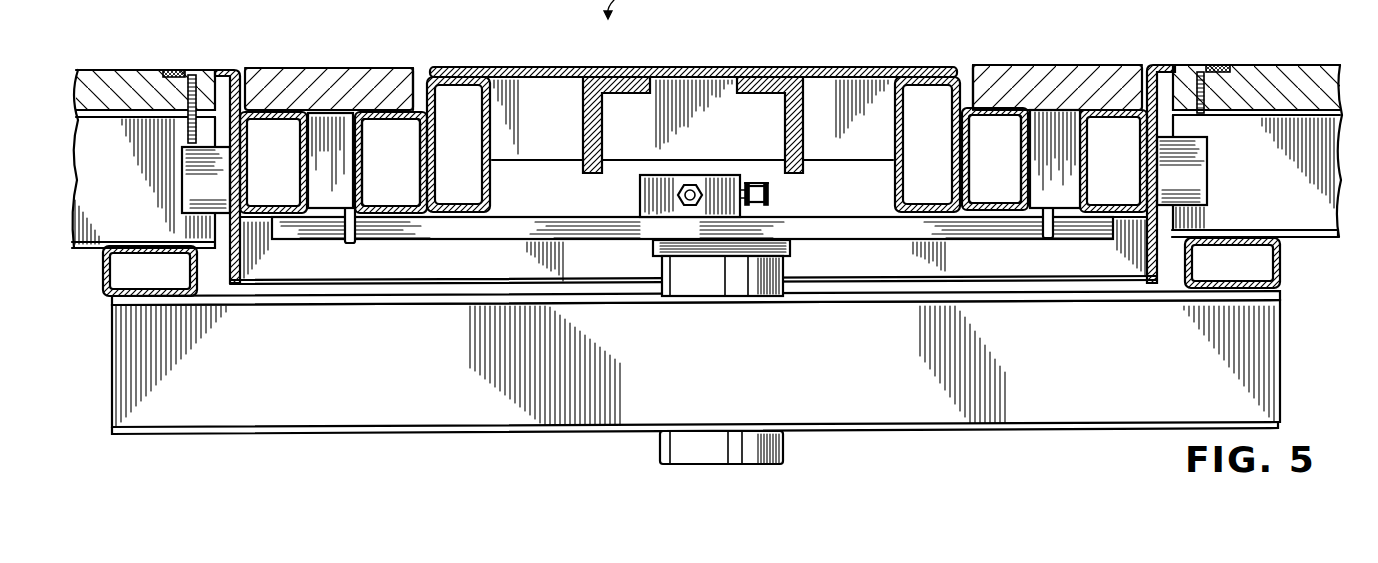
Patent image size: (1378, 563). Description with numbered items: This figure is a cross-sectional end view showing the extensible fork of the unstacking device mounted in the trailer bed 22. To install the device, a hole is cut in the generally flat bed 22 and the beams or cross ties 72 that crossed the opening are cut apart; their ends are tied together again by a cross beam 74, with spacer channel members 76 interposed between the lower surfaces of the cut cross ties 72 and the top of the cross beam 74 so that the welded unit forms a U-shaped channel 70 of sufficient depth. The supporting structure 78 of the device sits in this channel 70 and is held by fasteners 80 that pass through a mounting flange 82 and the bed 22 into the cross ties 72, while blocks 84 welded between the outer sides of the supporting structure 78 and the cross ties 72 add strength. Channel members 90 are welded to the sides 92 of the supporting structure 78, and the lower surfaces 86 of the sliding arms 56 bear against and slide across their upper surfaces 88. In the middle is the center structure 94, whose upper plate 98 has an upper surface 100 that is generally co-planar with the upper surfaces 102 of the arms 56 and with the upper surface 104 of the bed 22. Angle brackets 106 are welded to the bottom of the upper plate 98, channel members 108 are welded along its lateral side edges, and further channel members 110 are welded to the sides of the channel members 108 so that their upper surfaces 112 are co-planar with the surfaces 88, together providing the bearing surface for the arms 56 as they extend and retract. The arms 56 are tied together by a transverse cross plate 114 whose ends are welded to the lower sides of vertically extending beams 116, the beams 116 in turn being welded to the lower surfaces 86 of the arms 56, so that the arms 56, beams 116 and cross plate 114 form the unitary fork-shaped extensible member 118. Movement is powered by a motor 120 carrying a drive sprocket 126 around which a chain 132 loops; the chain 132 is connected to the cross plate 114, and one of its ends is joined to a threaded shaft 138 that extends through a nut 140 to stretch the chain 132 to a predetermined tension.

The bed 22 is at (105, 62).
The arms 56 is at (413, 65).
The U-shaped channel 70 is at (218, 297).
The cross ties 72 is at (112, 173).
The cross beam 74 is at (378, 383).
The spacer channel members 76 is at (110, 292).
The supporting structure 78 is at (222, 62).
The fasteners 80 is at (197, 72).
The mounting flange 82 is at (182, 72).
The blocks 84 is at (212, 199).
The lower surfaces 86 is at (353, 114).
The upper surfaces 88 is at (277, 100).
The channel members 90 is at (243, 162).
The sides 92 is at (243, 262).
The center structure 94 is at (652, 58).
The upper plate 98 is at (712, 67).
The upper surface 100 is at (807, 67).
The upper surfaces 102 is at (307, 68).
The upper surface 104 is at (1300, 65).
The angle brackets 106 is at (583, 133).
The channel members 108 is at (492, 183).
The channel members 110 is at (418, 162).
The upper surfaces 112 is at (691, 160).
The cross plate 114 is at (437, 233).
The beams 116 is at (350, 243).
The extensible member 118 is at (613, 250).
The motor 120 is at (702, 280).
The drive sprocket 126 is at (770, 196).
The chain 132 is at (761, 183).
The threaded shaft 138 is at (678, 195).
The nut 140 is at (683, 182).